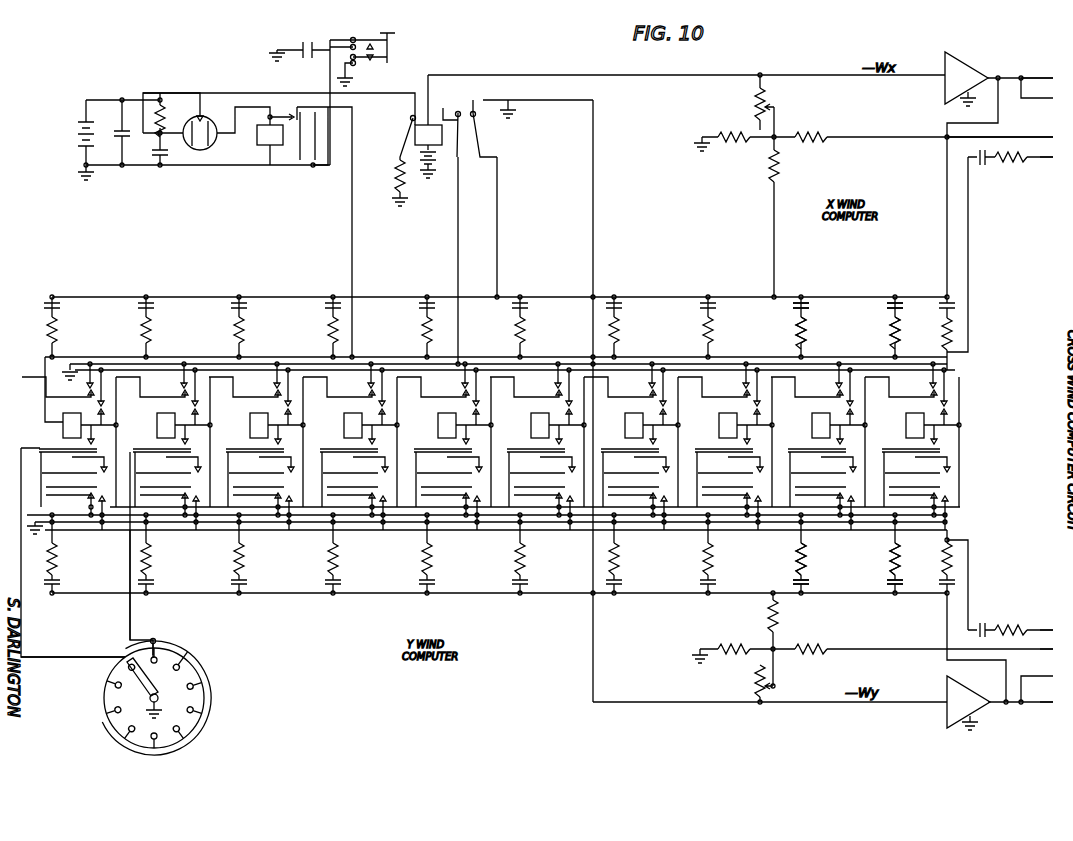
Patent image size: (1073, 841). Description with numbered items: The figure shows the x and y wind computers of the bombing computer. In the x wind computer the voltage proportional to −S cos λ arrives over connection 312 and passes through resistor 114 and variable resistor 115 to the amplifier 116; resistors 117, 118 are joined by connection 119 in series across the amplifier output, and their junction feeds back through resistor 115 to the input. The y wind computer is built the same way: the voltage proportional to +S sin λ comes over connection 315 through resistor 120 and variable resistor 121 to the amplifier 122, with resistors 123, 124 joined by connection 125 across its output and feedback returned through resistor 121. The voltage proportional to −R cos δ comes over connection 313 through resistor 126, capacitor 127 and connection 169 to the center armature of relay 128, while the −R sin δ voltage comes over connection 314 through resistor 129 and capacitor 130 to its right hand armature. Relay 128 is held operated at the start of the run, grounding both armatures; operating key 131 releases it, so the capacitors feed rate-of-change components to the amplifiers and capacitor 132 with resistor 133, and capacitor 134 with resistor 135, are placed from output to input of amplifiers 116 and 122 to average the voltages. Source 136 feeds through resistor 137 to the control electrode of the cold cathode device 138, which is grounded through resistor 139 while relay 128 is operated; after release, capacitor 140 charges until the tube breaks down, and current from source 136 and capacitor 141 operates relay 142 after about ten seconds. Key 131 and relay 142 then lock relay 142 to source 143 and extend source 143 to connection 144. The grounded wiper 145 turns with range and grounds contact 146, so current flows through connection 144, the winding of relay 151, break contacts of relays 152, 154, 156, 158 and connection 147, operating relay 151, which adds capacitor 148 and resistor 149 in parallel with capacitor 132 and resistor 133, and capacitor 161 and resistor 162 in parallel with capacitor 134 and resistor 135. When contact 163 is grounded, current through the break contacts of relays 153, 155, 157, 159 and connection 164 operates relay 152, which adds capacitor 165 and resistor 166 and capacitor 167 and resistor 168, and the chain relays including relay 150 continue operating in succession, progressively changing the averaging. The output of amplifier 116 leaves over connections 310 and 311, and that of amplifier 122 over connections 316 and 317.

The resistor 114 is at (812, 131).
The variable resistor 115 is at (758, 106).
The amplifier 116 is at (962, 70).
The resistor 117 is at (780, 170).
The resistor 118 is at (729, 142).
The connection 119 is at (774, 255).
The resistor 120 is at (806, 656).
The variable resistor 121 is at (757, 682).
The amplifier 122 is at (964, 690).
The resistor 123 is at (780, 610).
The resistor 124 is at (740, 643).
The connection 125 is at (947, 619).
The resistor 126 is at (1015, 165).
The capacitor 127 is at (979, 167).
The relay 128 is at (412, 131).
The resistor 129 is at (1013, 626).
The capacitor 130 is at (981, 625).
The key 131 is at (392, 44).
The capacitor 132 is at (945, 306).
The resistor 133 is at (942, 339).
The capacitor 134 is at (958, 584).
The resistor 135 is at (958, 555).
The source 136 is at (76, 126).
The resistor 137 is at (166, 122).
The three element cold cathode device 138 is at (217, 142).
The resistor 139 is at (398, 176).
The capacitor 140 is at (168, 153).
The capacitor 141 is at (116, 125).
The relay 142 is at (276, 148).
The source 143 is at (305, 36).
The connection 144 is at (352, 238).
The wiper 145 is at (150, 686).
The contact 146 is at (128, 668).
The connection 147 is at (21, 632).
The capacitor 148 is at (890, 305).
The resistor 149 is at (890, 338).
The chain relay 150 is at (63, 433).
The relay 151 is at (906, 433).
The relay 152 is at (812, 433).
The relay 153 is at (719, 433).
The relay 154 is at (625, 433).
The relay 155 is at (531, 433).
The relay 156 is at (438, 433).
The relay 157 is at (344, 433).
The relay 158 is at (250, 433).
The relay 159 is at (157, 433).
The capacitor 161 is at (890, 568).
The resistor 162 is at (890, 553).
The contact 163 is at (150, 639).
The connection 164 is at (130, 607).
The capacitor 165 is at (796, 305).
The resistor 166 is at (796, 338).
The capacitor 167 is at (796, 565).
The resistor 168 is at (796, 551).
The connection 169 is at (458, 238).
The connection 310 is at (1038, 73).
The connection 311 is at (1038, 99).
The connection 312 is at (1037, 135).
The connection 313 is at (1050, 159).
The connection 314 is at (1050, 636).
The connection 315 is at (1050, 650).
The connection 316 is at (1046, 668).
The connection 317 is at (1050, 702).